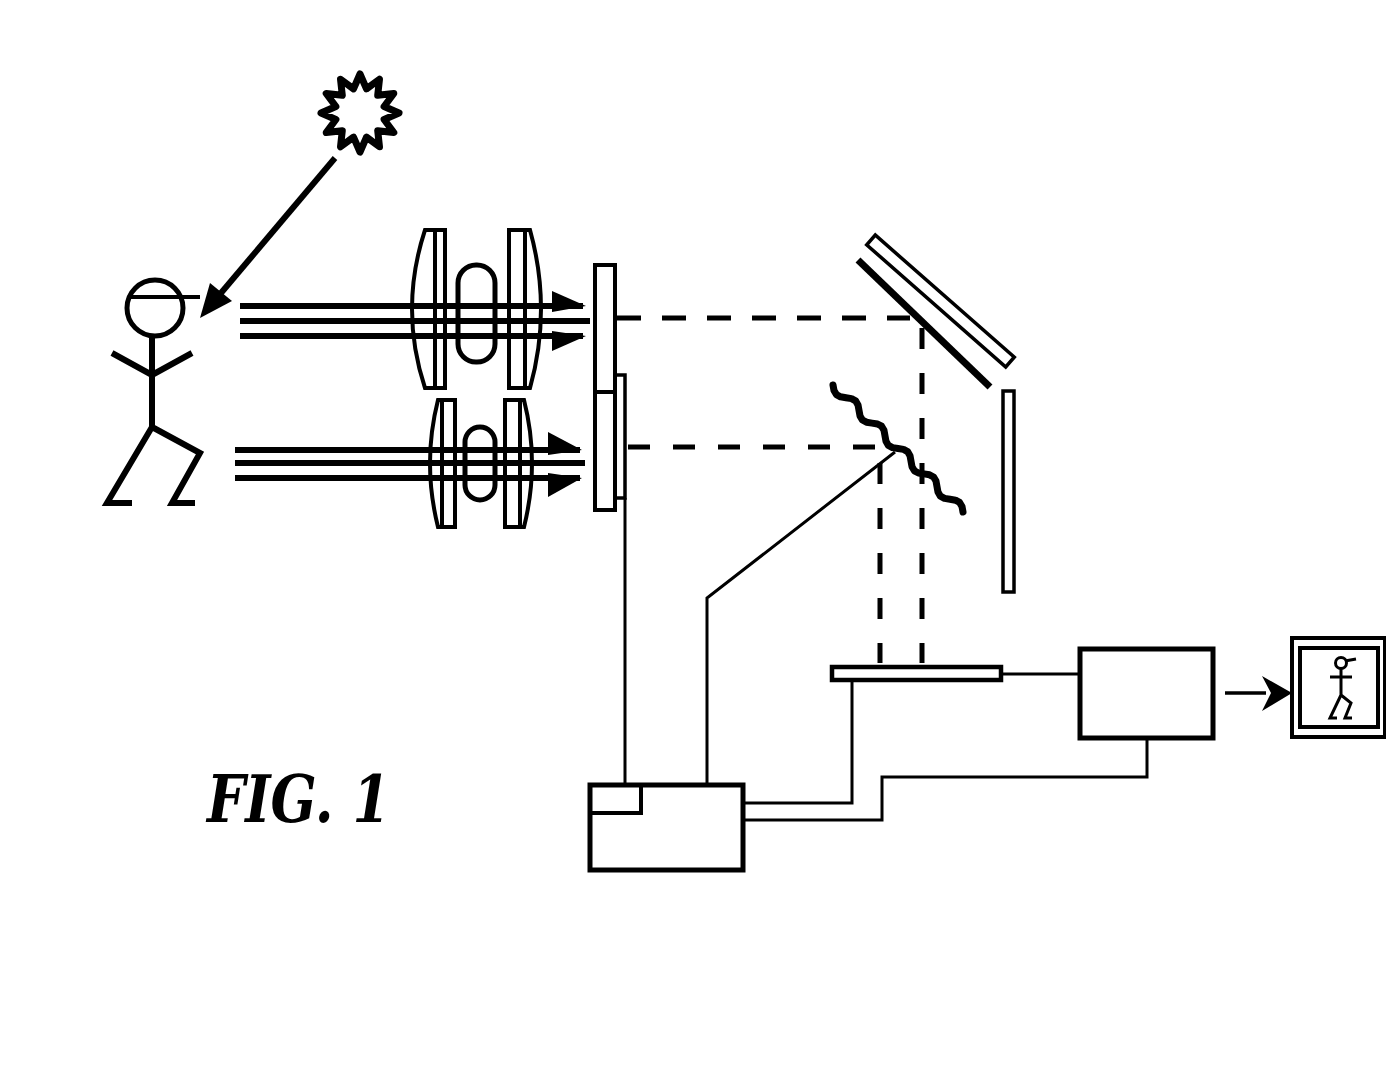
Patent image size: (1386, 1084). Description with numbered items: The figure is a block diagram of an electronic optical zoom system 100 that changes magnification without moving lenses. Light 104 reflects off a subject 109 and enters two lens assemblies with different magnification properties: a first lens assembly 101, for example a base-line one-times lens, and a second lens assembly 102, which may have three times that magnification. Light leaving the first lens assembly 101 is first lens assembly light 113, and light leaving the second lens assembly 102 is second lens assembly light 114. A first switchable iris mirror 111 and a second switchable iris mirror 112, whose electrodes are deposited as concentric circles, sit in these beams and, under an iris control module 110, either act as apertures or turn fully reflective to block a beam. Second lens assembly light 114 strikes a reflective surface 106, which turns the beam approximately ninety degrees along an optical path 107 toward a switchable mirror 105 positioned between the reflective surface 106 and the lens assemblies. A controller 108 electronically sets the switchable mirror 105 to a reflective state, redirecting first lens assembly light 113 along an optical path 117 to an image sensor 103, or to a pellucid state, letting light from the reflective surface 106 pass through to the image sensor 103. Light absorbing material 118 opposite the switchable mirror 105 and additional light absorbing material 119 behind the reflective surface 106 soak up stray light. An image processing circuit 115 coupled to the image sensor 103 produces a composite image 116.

The electronic optical zoom system 100 is at (1125, 312).
The first lens assembly 101 is at (455, 532).
The second lens assembly 102 is at (448, 222).
The image sensor 103 is at (943, 682).
The light 104 is at (253, 253).
The switchable mirror 105 is at (862, 403).
The reflective surface 106 is at (860, 260).
The optical path 107 is at (845, 317).
The controller 108 is at (695, 873).
The subject 109 is at (190, 477).
The iris control module 110 is at (588, 798).
The first switchable iris mirror 111 is at (617, 477).
The second switchable iris mirror 112 is at (617, 295).
The first lens assembly light 113 is at (373, 447).
The second lens assembly light 114 is at (373, 303).
The image processing circuit 115 is at (1147, 647).
The composite image 116 is at (1335, 638).
The optical path 117 is at (777, 447).
The light absorbing material 118 is at (1016, 470).
The additional light absorbing material 119 is at (997, 347).